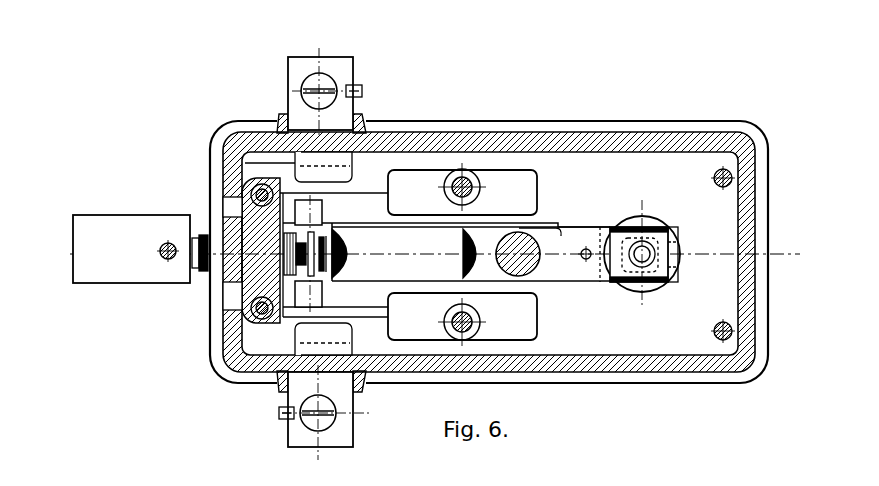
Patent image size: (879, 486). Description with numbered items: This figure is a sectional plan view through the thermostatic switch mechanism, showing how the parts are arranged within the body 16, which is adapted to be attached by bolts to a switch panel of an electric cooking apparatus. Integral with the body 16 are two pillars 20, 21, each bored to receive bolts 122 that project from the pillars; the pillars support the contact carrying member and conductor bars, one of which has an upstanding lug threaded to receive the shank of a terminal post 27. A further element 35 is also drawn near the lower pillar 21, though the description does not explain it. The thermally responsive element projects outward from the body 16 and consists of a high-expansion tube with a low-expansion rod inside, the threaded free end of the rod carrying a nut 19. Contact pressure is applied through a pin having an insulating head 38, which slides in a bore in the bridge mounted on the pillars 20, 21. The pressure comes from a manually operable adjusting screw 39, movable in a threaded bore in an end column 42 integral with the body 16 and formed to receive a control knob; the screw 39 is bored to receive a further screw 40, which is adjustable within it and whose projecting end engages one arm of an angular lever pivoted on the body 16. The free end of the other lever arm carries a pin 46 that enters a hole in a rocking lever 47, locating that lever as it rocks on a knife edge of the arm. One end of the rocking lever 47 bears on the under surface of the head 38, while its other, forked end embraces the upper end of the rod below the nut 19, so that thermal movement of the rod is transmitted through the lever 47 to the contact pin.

The body 16 is at (713, 382).
The nut 19 is at (652, 238).
The pillar 20 is at (538, 190).
The pillar 21 is at (538, 332).
The terminal post 27 is at (342, 75).
The rail fastening bolt 35 is at (446, 320).
The head 38 is at (537, 262).
The adjusting screw 39 is at (197, 230).
The screw 40 is at (328, 225).
The end column 42 is at (250, 288).
The pin 46 is at (587, 248).
The rocking lever 47 is at (590, 270).
The bolt 122 is at (480, 320).